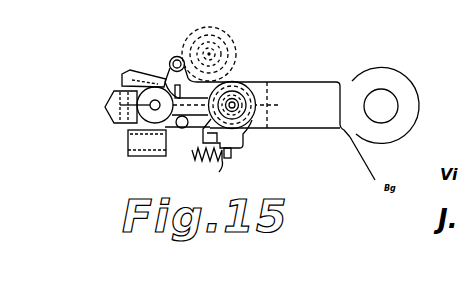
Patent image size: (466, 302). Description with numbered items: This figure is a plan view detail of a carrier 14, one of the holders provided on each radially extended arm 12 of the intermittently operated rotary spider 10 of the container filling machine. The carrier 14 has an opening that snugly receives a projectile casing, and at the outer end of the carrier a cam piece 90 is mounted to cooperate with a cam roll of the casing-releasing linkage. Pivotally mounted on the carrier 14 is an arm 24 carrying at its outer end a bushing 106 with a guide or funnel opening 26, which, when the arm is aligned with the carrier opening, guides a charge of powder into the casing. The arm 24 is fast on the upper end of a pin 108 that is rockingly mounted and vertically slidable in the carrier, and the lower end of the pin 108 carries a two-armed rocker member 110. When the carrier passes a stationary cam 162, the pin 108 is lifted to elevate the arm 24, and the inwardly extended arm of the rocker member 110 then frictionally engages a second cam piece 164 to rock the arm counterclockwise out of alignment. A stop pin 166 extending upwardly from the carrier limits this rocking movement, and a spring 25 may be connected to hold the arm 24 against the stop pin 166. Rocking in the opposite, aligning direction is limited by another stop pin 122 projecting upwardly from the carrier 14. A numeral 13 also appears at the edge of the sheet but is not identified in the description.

The stray numeral 13 is at (28, 8).
The rotary spider 10 is at (361, 72).
The radially extended arm 12 is at (351, 82).
The carrier 14 is at (293, 82).
The bushing 106 is at (289, 104).
The arm 24 is at (204, 32).
The funnel opening 26 is at (236, 112).
The spring 25 is at (219, 172).
The second cam piece 164 is at (192, 150).
The stop pin 166 is at (178, 56).
The stop pin 122 is at (179, 129).
The two-armed rocker member 110 is at (135, 72).
The cam piece 90 is at (106, 104).
The pin 108 is at (128, 134).
The stationary cam 162 is at (111, 165).